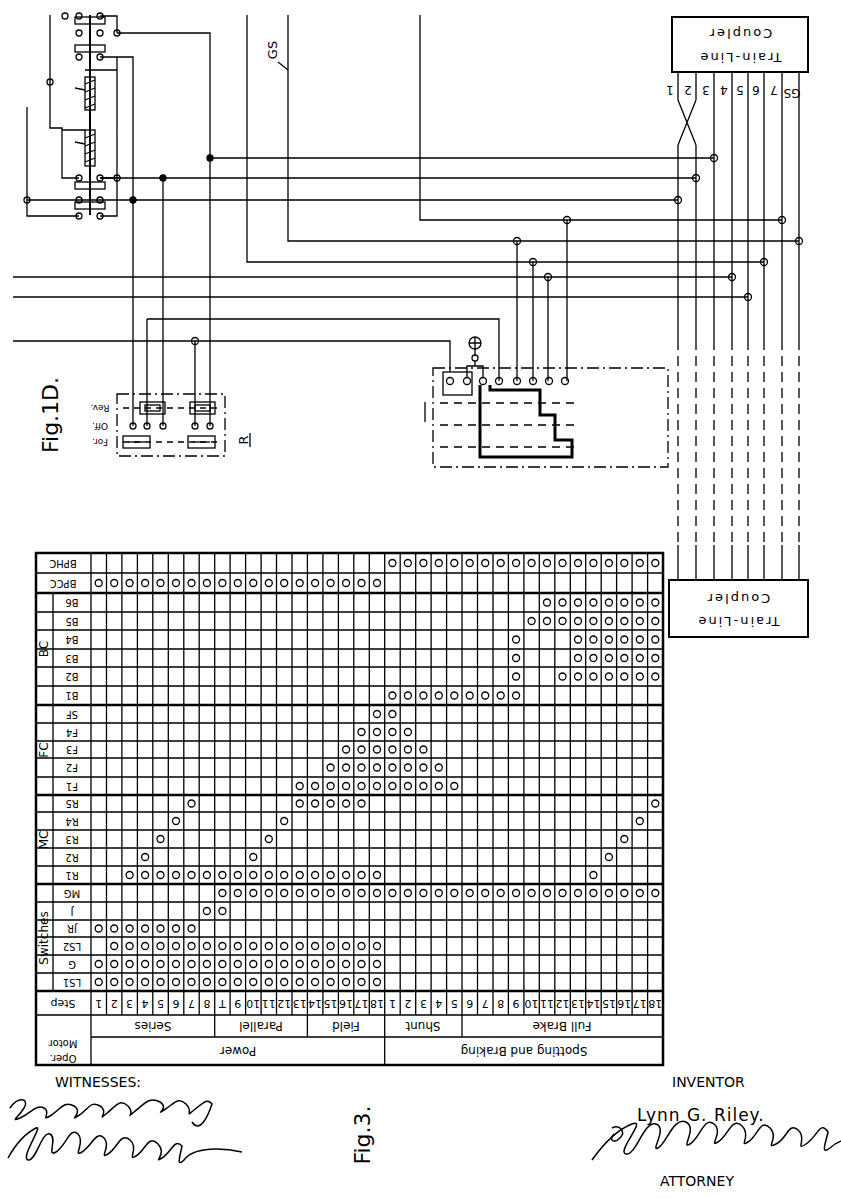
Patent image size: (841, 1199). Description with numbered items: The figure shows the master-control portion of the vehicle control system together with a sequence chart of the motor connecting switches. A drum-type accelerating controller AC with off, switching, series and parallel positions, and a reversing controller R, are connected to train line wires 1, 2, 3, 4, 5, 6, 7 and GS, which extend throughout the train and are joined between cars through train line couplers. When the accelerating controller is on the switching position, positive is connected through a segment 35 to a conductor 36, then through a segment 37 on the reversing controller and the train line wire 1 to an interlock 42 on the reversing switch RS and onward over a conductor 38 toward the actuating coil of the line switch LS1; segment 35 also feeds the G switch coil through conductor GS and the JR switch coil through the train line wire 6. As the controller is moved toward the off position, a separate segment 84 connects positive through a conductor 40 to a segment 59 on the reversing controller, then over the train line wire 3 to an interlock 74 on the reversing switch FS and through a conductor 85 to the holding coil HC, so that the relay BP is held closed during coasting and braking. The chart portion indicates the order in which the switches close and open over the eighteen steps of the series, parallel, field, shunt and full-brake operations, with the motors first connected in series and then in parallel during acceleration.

The train line wire 1 is at (126, 232).
The train line wire 2 is at (156, 226).
The train line wire 3 is at (203, 226).
The train line wire 4 is at (63, 276).
The train line wire 5 is at (63, 296).
The train line wire 6 is at (247, 50).
The train line wire 7 is at (420, 72).
The segment 35 is at (520, 458).
The conductor 36 is at (372, 322).
The segment 37 is at (143, 450).
The conductor 38 is at (13, 107).
The conductor 40 is at (352, 343).
The interlock 42 is at (75, 202).
The segment 59 is at (205, 450).
The interlock 74 is at (78, 44).
The segment 84 is at (443, 388).
The conductor 85 is at (50, 27).